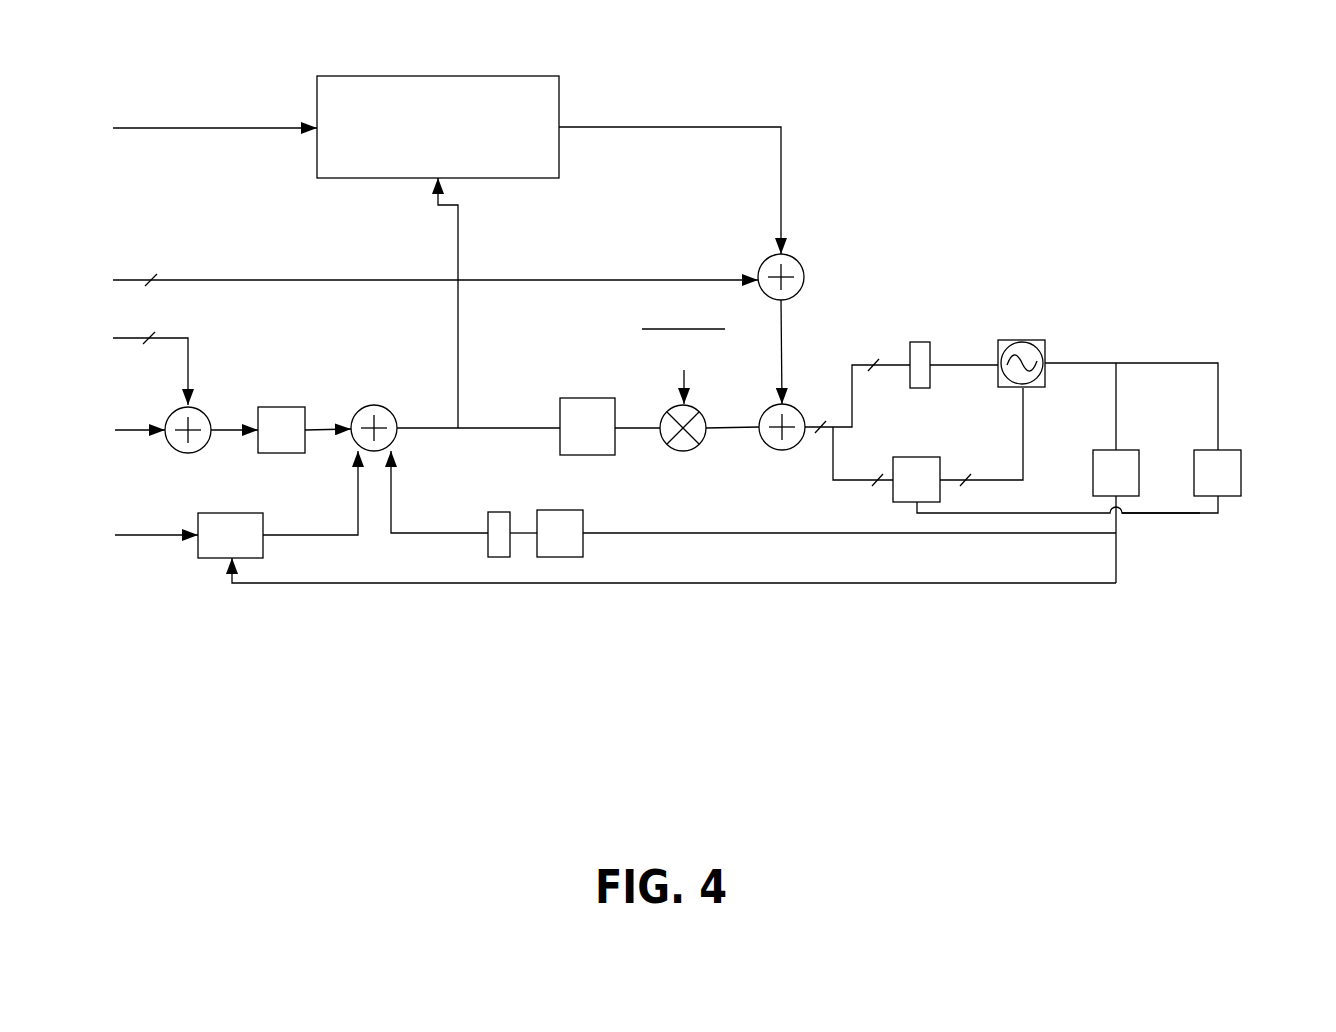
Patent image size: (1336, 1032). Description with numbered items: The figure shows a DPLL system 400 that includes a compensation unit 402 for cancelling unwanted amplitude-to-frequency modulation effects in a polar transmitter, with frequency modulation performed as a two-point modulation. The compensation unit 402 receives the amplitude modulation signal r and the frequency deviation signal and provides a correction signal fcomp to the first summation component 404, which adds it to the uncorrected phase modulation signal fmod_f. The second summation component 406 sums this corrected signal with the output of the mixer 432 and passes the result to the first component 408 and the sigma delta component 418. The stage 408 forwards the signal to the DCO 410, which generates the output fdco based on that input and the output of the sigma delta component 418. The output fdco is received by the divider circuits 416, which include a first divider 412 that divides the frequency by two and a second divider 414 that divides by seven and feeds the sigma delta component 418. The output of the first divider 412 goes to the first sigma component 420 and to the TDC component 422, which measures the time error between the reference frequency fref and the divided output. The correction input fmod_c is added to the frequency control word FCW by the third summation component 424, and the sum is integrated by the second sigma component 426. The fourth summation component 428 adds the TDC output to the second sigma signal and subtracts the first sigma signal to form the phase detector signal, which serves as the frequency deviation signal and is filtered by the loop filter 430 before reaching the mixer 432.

The DPLL system 400 is at (938, 784).
The compensation unit 402 is at (438, 127).
The first summation component 404 is at (806, 246).
The second summation component 406 is at (758, 458).
The first component 408 is at (913, 342).
The DCO 410 is at (1048, 345).
The first divider 412 is at (1121, 450).
The second divider 414 is at (1231, 450).
The divider circuits 416 is at (1178, 533).
The sigma delta component 418 is at (917, 457).
The first sigma component 420 is at (574, 501).
The TDC component 422 is at (232, 513).
The third summation component 424 is at (172, 452).
The second sigma component 426 is at (262, 407).
The fourth summation component 428 is at (368, 406).
The loop filter 430 is at (559, 440).
The mixer 432 is at (702, 410).